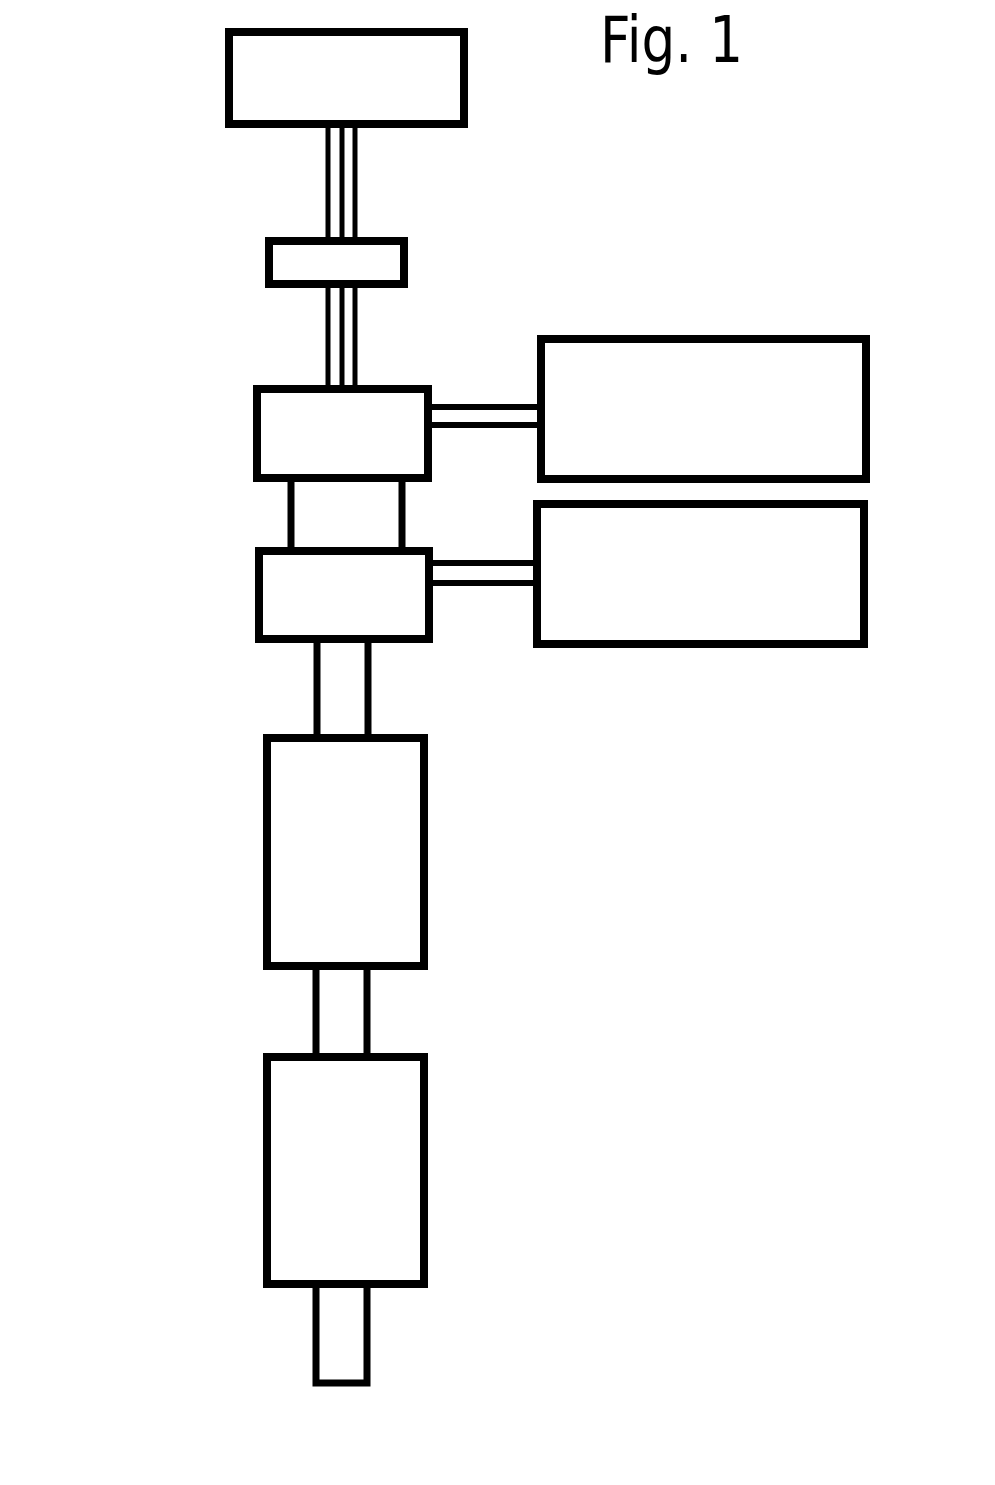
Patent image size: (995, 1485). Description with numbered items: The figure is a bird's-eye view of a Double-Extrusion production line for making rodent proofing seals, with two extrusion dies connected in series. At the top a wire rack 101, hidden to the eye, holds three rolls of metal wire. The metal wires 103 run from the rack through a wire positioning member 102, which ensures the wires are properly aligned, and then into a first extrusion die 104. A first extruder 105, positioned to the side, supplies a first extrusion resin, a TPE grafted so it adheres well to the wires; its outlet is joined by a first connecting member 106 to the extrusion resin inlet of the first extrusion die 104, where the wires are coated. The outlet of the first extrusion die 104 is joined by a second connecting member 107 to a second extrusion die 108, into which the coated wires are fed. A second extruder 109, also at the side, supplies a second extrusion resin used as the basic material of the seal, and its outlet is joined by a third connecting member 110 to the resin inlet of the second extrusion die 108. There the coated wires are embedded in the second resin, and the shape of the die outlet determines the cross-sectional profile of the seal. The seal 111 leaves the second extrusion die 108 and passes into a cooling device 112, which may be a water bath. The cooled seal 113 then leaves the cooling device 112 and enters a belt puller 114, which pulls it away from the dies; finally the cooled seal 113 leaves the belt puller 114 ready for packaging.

The wire rack 101 is at (226, 78).
The wire positioning member 102 is at (408, 258).
The metal wires 103 is at (220, 256).
The first extrusion die 104 is at (255, 433).
The first extruder 105 is at (707, 337).
The first connecting member 106 is at (485, 402).
The second connecting member 107 is at (288, 515).
The second extrusion die 108 is at (256, 597).
The second extruder 109 is at (702, 648).
The third connecting member 110 is at (483, 588).
The seal 111 is at (314, 688).
The cooling device 112 is at (428, 852).
The cooled seal 113 is at (313, 1013).
The belt puller 114 is at (428, 1172).